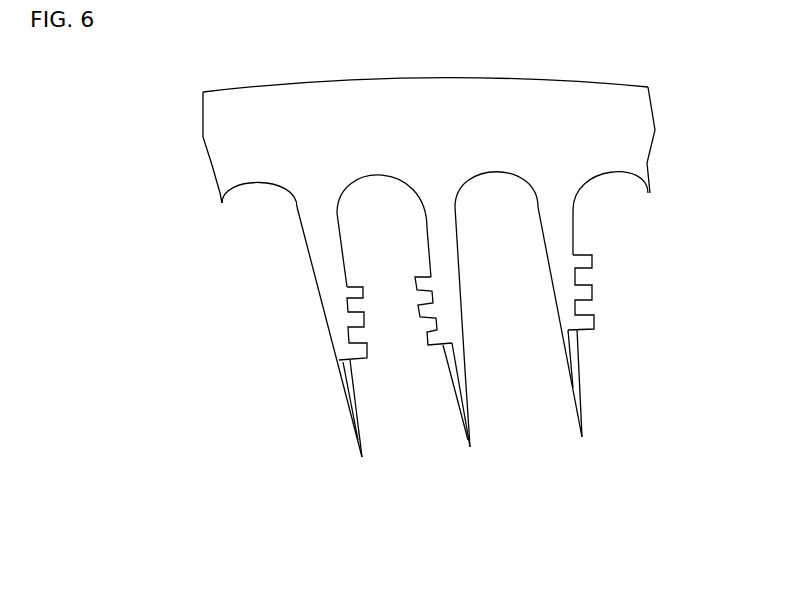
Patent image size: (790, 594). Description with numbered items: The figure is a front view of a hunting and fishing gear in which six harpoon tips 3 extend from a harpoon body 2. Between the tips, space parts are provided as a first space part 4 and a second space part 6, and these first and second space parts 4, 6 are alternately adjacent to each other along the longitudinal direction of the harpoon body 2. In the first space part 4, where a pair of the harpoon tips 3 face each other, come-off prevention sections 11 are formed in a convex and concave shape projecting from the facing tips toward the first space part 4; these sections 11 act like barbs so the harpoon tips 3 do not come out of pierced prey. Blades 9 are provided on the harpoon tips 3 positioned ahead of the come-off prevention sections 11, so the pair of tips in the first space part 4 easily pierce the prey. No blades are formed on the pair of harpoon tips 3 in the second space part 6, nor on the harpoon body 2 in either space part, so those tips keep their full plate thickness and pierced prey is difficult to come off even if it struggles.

The harpoon body 2 is at (575, 123).
The harpoon tip 3 is at (358, 425).
The first space part 4 is at (378, 197).
The second space part 6 is at (492, 187).
The blade 9 is at (348, 380).
The come-off prevention section 11 is at (357, 352).